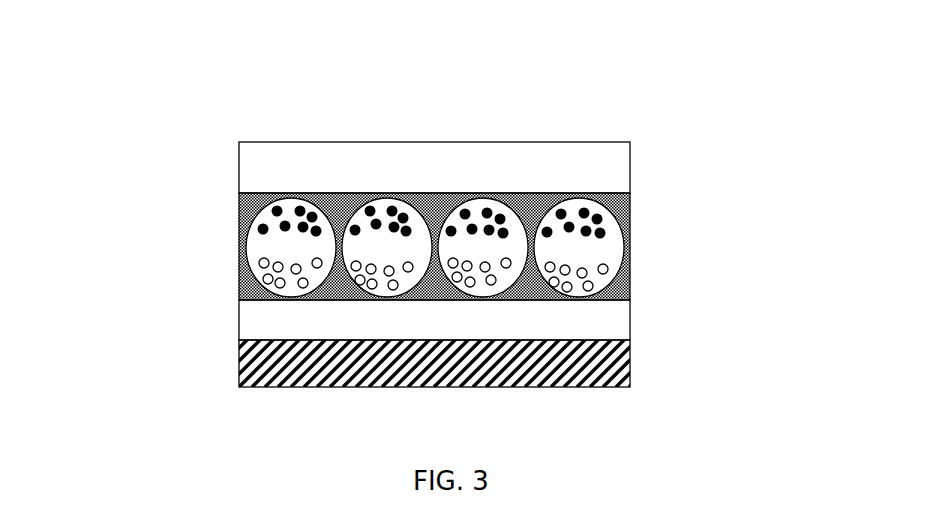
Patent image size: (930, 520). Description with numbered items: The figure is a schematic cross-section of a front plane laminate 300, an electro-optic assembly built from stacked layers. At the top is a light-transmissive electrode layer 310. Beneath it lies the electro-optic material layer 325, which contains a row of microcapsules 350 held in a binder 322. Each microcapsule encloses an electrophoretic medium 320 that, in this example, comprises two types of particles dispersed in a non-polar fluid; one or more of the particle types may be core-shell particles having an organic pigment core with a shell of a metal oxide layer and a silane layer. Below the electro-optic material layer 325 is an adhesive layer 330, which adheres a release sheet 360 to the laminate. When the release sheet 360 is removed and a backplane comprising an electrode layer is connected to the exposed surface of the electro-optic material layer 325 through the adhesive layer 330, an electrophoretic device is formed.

The front plane laminate 300 is at (328, 122).
The light-transmissive electrode layer 310 is at (434, 167).
The electrophoretic medium 320 is at (271, 248).
The binder 322 is at (245, 290).
The electro-optic material layer 325 is at (431, 162).
The adhesive layer 330 is at (434, 320).
The microcapsules 350 is at (501, 194).
The release sheet 360 is at (240, 364).